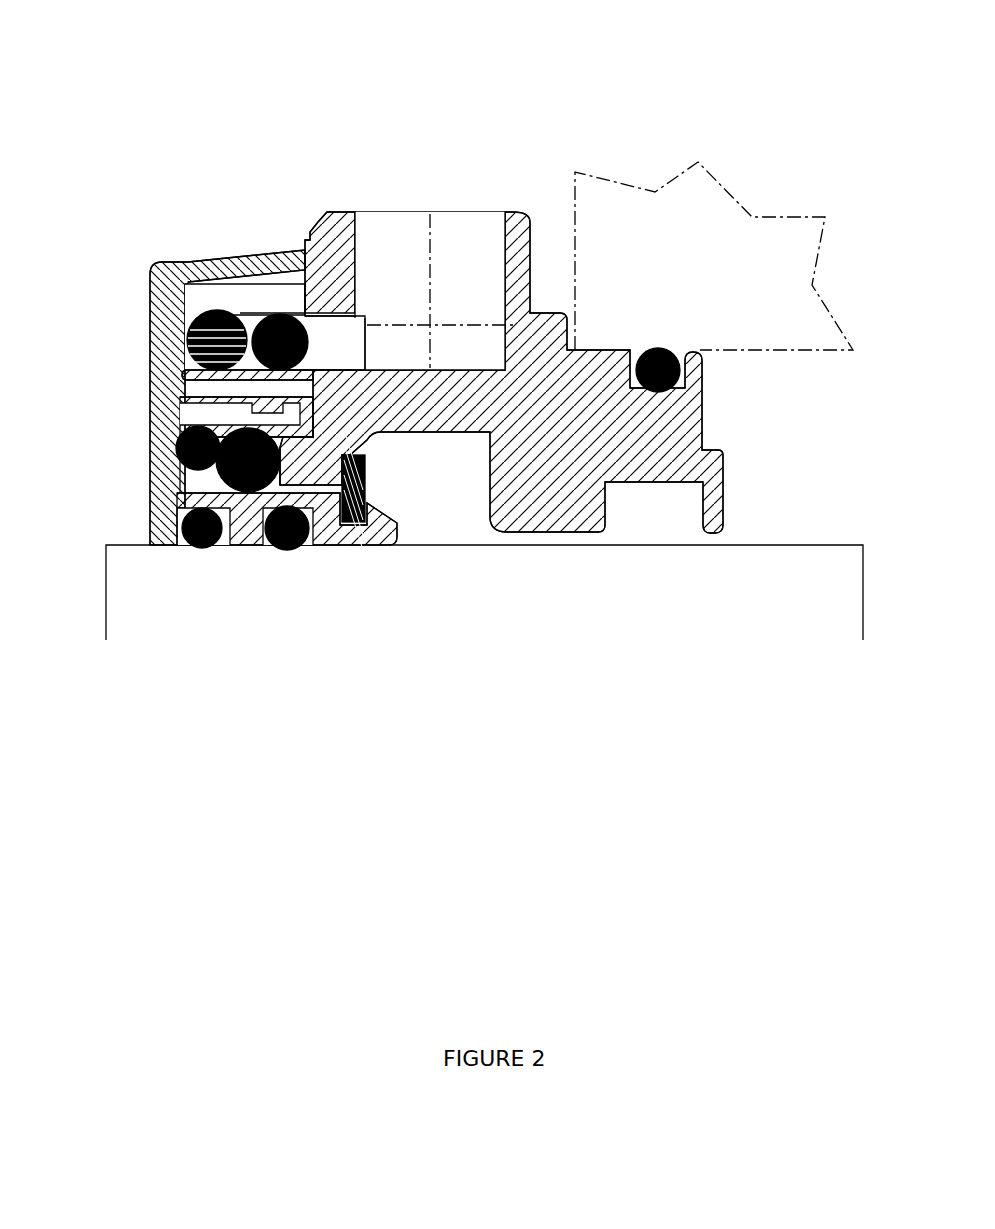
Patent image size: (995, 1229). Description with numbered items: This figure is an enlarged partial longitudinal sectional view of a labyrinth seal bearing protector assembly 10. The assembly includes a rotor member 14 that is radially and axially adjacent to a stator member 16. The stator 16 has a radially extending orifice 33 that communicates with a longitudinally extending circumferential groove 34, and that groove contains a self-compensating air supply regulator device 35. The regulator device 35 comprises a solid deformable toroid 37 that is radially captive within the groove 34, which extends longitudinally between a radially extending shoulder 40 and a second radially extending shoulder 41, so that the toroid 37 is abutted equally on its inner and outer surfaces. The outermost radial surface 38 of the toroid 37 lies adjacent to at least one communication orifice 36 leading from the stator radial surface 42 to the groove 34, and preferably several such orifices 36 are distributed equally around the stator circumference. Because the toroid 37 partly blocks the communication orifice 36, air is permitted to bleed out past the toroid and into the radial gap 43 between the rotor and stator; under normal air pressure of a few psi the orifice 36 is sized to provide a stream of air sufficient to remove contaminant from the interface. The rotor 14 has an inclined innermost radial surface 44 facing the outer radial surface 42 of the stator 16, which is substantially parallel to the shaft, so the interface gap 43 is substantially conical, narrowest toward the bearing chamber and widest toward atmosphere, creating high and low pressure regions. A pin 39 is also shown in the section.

The bearing protector assembly 10 is at (128, 232).
The rotor member 14 is at (158, 333).
The stator member 16 is at (533, 225).
The radially extending orifice 33 is at (458, 235).
The circumferential groove 34 is at (343, 337).
The self-compensating air supply regulator device 35 is at (277, 302).
The communication orifice 36 is at (292, 292).
The solid deformable toroid 37 is at (262, 313).
The outermost radial surface of toroid 38 is at (282, 318).
The drive pin 39 is at (243, 360).
The radially extending shoulder 40 is at (272, 318).
The second radially extending shoulder 41 is at (305, 362).
The stator radial surface 42 is at (215, 277).
The radial gap 43 is at (300, 268).
The innermost radial surface 44 is at (193, 273).